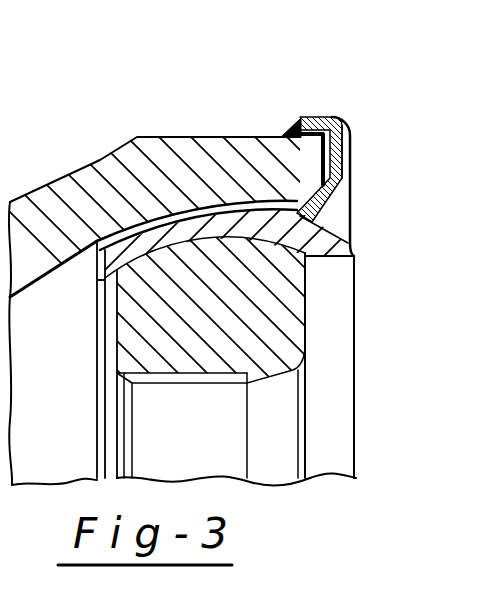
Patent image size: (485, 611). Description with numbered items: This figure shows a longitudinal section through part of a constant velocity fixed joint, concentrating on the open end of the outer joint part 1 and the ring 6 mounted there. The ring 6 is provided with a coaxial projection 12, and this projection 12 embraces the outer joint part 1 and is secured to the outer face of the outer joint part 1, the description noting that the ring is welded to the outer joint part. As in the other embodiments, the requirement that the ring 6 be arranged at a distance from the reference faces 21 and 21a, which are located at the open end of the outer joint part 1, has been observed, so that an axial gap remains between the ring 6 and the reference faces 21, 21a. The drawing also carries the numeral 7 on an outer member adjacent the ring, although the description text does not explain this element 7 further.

The outer joint part 1 is at (78, 217).
The ring 6 is at (338, 145).
The cover plate 7 is at (347, 185).
The coaxial projection 12 is at (313, 120).
The reference face 21 is at (317, 155).
The reference face 21a is at (300, 217).